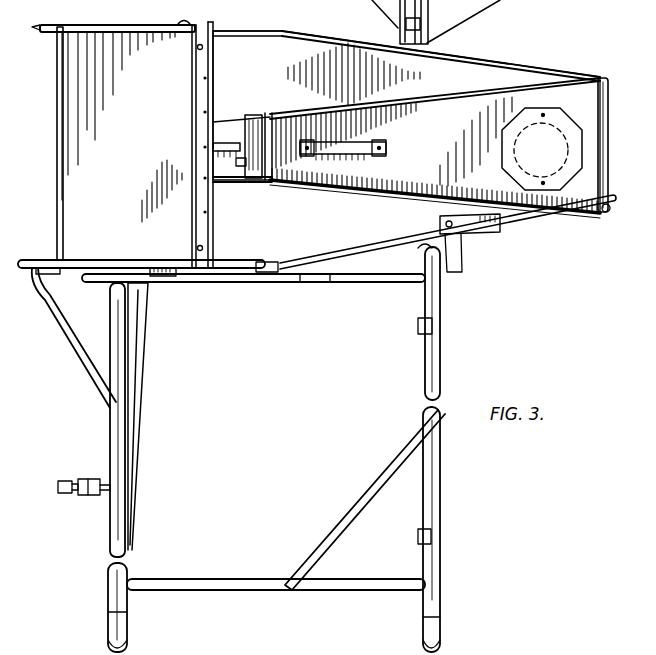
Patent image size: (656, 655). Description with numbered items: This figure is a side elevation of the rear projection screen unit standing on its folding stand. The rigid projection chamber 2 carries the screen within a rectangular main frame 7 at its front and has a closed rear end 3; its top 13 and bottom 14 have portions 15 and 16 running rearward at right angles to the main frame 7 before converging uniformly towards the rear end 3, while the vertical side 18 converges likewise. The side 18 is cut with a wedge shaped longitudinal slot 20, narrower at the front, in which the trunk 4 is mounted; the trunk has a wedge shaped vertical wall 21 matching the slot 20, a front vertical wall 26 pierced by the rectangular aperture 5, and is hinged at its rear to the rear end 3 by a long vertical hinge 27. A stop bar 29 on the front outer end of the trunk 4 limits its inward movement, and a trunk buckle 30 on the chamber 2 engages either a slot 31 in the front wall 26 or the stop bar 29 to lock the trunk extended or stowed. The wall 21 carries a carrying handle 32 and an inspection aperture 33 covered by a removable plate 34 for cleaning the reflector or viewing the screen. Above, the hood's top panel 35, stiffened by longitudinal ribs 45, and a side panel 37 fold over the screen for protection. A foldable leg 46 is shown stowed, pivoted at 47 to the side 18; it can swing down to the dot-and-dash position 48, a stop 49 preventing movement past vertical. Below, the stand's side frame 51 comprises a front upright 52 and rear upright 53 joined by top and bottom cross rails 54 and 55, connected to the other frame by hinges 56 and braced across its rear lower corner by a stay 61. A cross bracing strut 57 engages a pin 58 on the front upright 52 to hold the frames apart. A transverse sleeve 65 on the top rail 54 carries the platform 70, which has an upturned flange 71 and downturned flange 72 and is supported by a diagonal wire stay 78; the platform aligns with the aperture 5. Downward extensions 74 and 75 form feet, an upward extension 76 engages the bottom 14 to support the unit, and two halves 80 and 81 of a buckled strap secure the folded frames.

The projection chamber 2 is at (422, 82).
The rear end 3 is at (601, 134).
The trunk 4 is at (413, 170).
The aperture 5 is at (257, 183).
The main frame 7 is at (193, 94).
The top 13 is at (348, 44).
The bottom 14 is at (366, 258).
The rearwardly extending portion of top 15 is at (240, 33).
The rearwardly extending portion of bottom 16 is at (270, 274).
The vertical side 18 is at (434, 149).
The wedge shaped longitudinal slot 20 is at (335, 100).
The vertical wall of trunk 21 is at (455, 141).
The front vertical wall of trunk 26 is at (240, 163).
The vertical hinge 27 is at (600, 206).
The stop bar 29 is at (278, 114).
The trunk buckle 30 is at (218, 142).
The slot 31 is at (246, 118).
The carrying handle 32 is at (354, 143).
The inspection aperture 33 is at (566, 148).
The removable plate 34 is at (563, 122).
The top panel 35 is at (84, 26).
The side panel 37 is at (86, 172).
The longitudinal ribs 45 is at (30, 25).
The foldable leg 46 is at (480, 234).
The pivot 47 is at (438, 230).
The leg lowered position 48 is at (463, 268).
The stop 49 is at (421, 248).
The side frame 51 is at (383, 594).
The front upright 52 is at (108, 582).
The rear upright 53 is at (436, 417).
The top cross rail 54 is at (316, 284).
The bottom cross rail 55 is at (237, 579).
The hinges 56 is at (433, 328).
The cross bracing strut 57 is at (128, 484).
The pin 58 is at (133, 552).
The stays 61 is at (377, 487).
The transverse sleeve 65 is at (202, 283).
The platform 70 is at (47, 272).
The upturned flange 71 is at (36, 260).
The downturned flange 72 is at (161, 286).
The downward extension 74 is at (440, 634).
The downward extension 75 is at (132, 648).
The upward extension 76 is at (440, 288).
The diagonal wire stay 78 is at (68, 333).
The buckled strap half 80 is at (85, 512).
The buckled strap half 81 is at (100, 496).